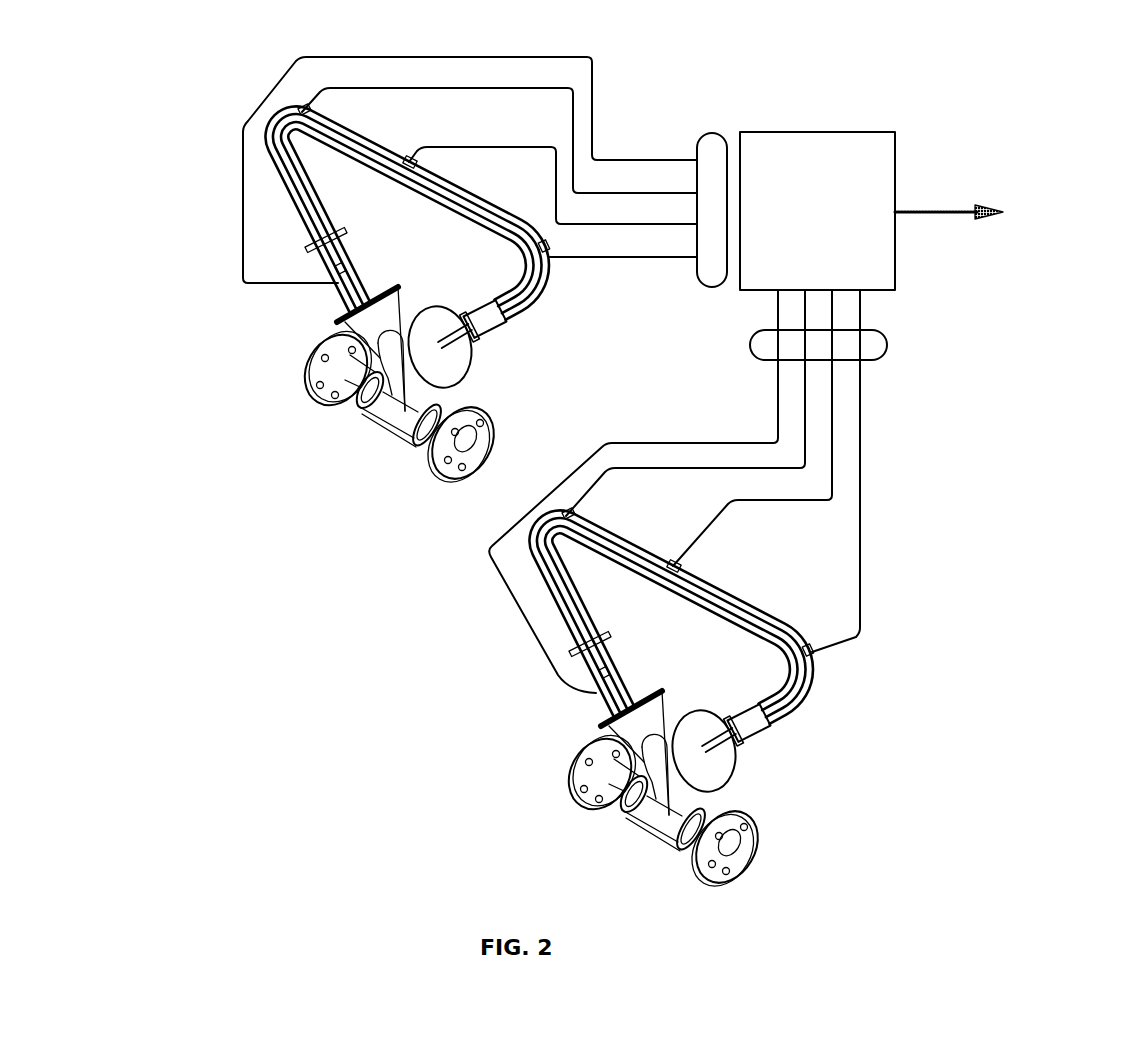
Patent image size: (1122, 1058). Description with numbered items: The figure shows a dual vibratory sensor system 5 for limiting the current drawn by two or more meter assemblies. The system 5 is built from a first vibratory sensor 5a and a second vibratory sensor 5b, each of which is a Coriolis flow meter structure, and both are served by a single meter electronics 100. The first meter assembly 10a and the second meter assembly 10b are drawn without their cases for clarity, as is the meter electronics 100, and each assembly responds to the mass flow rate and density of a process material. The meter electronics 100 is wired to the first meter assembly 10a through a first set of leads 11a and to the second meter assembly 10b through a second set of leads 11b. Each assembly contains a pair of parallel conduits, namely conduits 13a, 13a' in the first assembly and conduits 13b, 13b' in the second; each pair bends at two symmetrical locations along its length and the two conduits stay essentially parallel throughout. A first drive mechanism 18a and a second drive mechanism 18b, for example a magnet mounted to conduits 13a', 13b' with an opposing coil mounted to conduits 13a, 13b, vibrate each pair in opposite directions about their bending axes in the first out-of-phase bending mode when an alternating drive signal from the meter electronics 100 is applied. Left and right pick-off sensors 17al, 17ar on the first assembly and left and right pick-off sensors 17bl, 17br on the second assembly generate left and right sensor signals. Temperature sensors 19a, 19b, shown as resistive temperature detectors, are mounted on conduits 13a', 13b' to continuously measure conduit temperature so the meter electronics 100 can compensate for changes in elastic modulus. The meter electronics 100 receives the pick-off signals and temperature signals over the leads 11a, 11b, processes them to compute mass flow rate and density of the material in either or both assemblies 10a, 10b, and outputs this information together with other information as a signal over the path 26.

The dual vibratory sensor system 5 is at (584, 485).
The first vibratory sensor 5a is at (928, 765).
The second vibratory sensor 5b is at (156, 75).
The first meter assembly 10a is at (808, 852).
The second meter assembly 10b is at (262, 345).
The first set of leads 11a is at (889, 344).
The second set of leads 11b is at (706, 132).
The conduit 13a is at (625, 616).
The conduit 13a' is at (675, 636).
The conduit 13b is at (363, 212).
The conduit 13b' is at (417, 242).
The left pick-off sensor 17al is at (542, 484).
The right pick-off sensor 17ar is at (859, 672).
The left pick-off sensor 17bl is at (302, 110).
The right pick-off sensor 17br is at (548, 264).
The first drive mechanism 18a is at (654, 538).
The second drive mechanism 18b is at (409, 160).
The temperature sensor 19a is at (635, 654).
The temperature sensor 19b is at (346, 268).
The path 26 is at (948, 211).
The meter electronics 100 is at (838, 255).